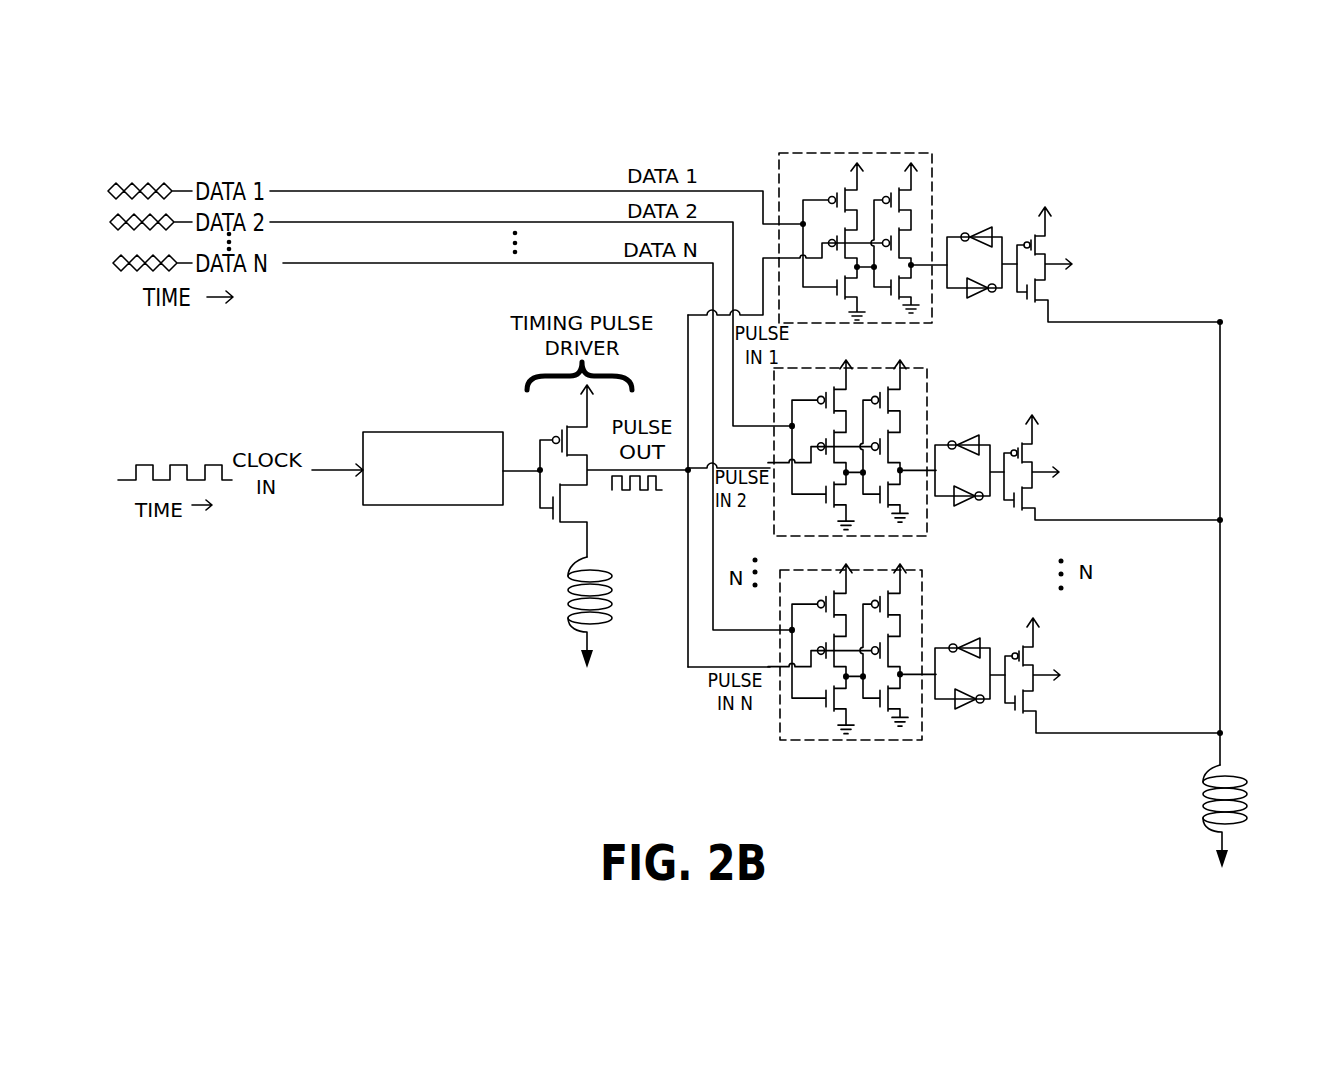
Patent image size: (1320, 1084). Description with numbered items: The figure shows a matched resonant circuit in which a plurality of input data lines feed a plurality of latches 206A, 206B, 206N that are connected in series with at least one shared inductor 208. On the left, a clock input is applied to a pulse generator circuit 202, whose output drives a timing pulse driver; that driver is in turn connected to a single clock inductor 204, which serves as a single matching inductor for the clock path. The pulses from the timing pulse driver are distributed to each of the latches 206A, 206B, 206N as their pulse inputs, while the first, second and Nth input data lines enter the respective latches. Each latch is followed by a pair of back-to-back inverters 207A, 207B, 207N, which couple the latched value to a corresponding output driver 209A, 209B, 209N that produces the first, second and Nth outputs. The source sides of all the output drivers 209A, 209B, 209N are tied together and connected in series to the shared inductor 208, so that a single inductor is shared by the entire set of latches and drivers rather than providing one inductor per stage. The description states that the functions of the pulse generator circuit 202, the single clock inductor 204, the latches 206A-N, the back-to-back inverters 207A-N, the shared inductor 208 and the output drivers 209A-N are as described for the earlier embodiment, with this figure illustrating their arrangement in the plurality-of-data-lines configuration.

The pulse generator circuit 202 is at (392, 432).
The single clock inductor 204 is at (567, 629).
The latch 206A is at (932, 153).
The latch 206B is at (927, 405).
The latch 206N is at (922, 625).
The back-to-back inverter 207A is at (990, 237).
The back-to-back inverter 207B is at (975, 445).
The back-to-back inverter 207N is at (978, 648).
The shared inductor 208 is at (1203, 819).
The output driver 209A is at (1045, 247).
The output driver 209B is at (1033, 455).
The output driver 209N is at (1035, 657).